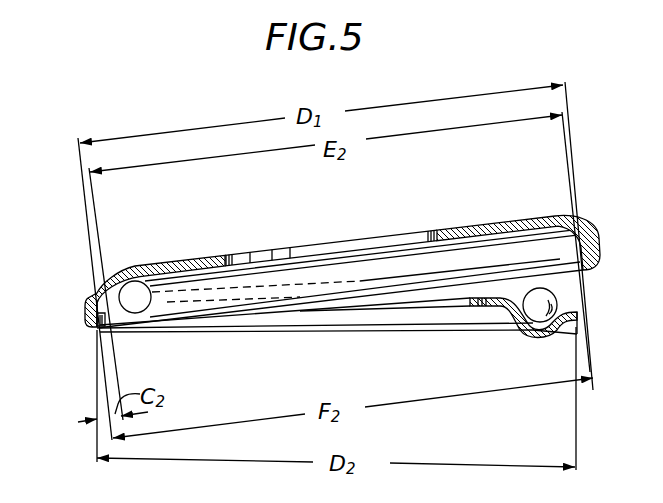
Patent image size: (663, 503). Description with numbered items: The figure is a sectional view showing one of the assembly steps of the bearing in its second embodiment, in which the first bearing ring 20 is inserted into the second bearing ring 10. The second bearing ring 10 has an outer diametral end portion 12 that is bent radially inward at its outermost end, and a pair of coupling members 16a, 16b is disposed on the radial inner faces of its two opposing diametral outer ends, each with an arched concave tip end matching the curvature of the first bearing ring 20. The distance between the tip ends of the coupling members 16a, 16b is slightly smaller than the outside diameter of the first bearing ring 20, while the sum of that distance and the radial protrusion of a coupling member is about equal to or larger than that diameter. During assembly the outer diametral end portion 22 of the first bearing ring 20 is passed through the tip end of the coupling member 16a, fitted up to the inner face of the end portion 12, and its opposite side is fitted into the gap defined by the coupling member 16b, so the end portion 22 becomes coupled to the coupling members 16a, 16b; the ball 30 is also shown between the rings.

The second bearing ring 10 is at (523, 216).
The outer diametral end portion 12 is at (88, 327).
The coupling member 16a is at (103, 325).
The coupling member 16b is at (583, 268).
The first bearing ring 20 is at (505, 318).
The outer diametral end portion 22 is at (96, 296).
The ball detent 30 is at (538, 316).